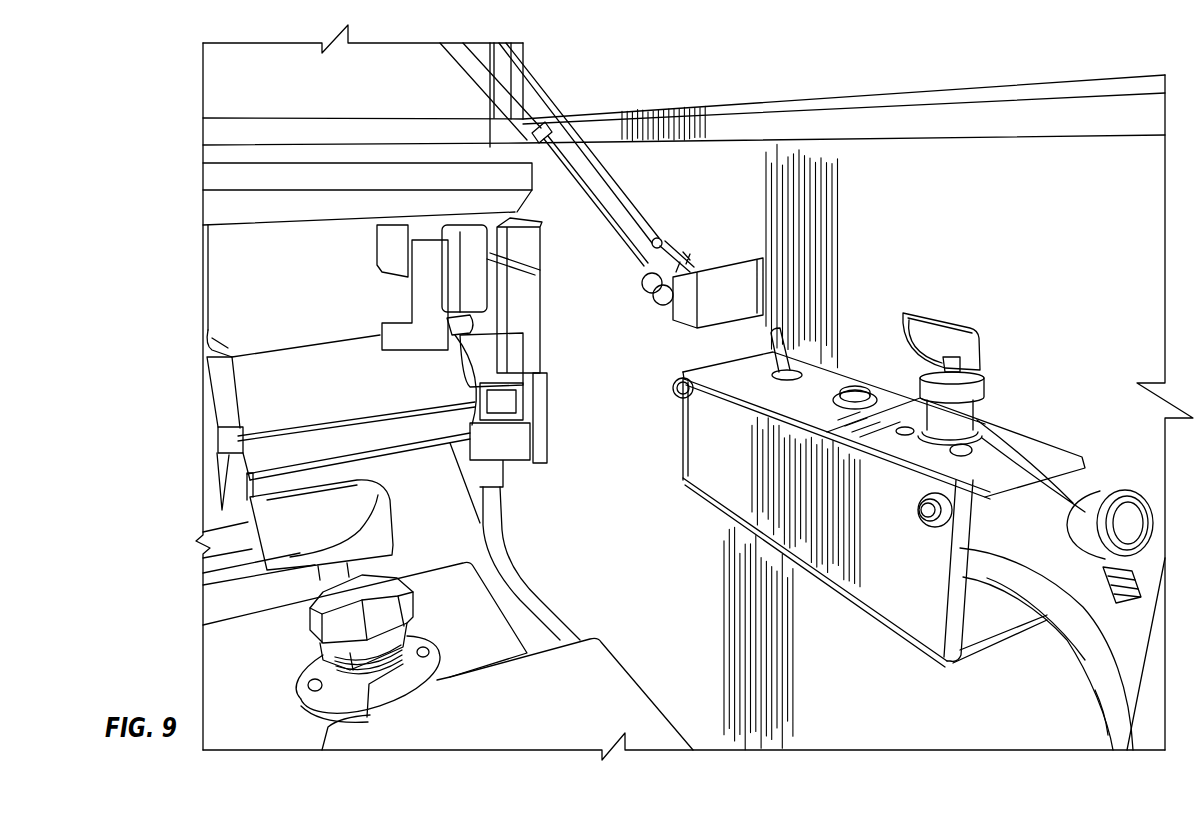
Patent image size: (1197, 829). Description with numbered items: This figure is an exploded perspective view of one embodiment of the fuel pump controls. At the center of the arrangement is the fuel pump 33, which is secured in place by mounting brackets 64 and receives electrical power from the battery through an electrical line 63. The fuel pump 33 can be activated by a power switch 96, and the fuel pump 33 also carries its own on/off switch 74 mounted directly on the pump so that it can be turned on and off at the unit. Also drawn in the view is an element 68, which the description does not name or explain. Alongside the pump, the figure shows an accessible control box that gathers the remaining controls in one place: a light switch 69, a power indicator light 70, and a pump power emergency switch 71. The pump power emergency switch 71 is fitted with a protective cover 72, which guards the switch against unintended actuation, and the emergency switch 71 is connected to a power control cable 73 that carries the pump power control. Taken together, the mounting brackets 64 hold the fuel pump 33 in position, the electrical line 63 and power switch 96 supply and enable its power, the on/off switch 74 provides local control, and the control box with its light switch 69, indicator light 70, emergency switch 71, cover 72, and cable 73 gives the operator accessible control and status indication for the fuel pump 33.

The fuel pump 33 is at (258, 370).
The electrical line 63 is at (557, 606).
The mounting brackets 64 is at (342, 632).
The gas spring 68 is at (573, 181).
The light switch 69 is at (786, 334).
The power indicator light 70 is at (857, 392).
The pump power emergency switch 71 is at (947, 337).
The protective cover 72 is at (1123, 522).
The power control cable 73 is at (1100, 671).
The on/off switch 74 is at (458, 323).
The power switch 96 is at (751, 497).